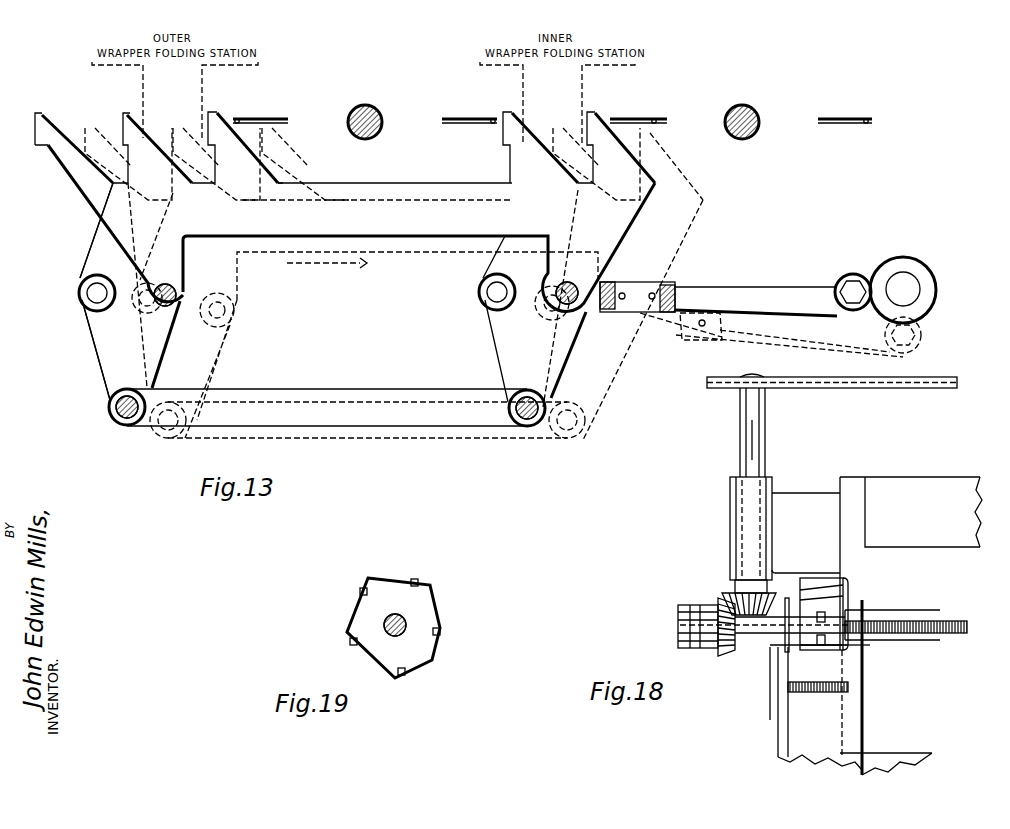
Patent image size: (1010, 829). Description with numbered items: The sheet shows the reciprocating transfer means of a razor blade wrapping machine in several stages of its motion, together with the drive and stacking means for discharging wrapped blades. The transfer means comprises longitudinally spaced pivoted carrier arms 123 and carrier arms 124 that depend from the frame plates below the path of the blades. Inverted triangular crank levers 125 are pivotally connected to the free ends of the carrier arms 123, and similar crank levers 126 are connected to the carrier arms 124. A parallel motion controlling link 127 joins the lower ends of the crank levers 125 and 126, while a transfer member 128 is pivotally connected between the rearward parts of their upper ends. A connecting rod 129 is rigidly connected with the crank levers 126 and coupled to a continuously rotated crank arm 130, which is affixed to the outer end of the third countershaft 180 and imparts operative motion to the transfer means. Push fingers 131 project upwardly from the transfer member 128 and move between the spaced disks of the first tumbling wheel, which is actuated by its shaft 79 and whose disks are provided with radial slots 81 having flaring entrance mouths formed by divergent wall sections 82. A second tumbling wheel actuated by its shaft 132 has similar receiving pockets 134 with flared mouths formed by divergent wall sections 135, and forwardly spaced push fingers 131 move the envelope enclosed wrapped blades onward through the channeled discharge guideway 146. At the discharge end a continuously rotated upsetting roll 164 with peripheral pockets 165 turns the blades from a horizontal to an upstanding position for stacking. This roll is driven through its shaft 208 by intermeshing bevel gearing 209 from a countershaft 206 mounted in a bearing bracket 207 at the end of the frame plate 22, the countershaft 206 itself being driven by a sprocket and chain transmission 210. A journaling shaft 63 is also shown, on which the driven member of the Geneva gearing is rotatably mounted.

In FIG. 13, the push fingers 131 is at (46, 104).
In FIG. 18, the push fingers 131 is at (865, 612).
In FIG. 13, the transfer member 128 is at (392, 183).
In FIG. 18, the transfer member 128 is at (950, 634).
In FIG. 13, the receiving pockets 134 is at (270, 118).
In FIG. 13, the divergent wall sections 135 is at (238, 117).
In FIG. 13, the shaft 132 is at (366, 105).
In FIG. 13, the shaft 79 is at (740, 105).
In FIG. 13, the radial slots 81 is at (650, 118).
In FIG. 13, the divergent wall sections 82 is at (612, 118).
In FIG. 13, the carrier arms 123 is at (100, 243).
In FIG. 13, the crank levers 125 is at (97, 350).
In FIG. 13, the carrier arms 124 is at (492, 258).
In FIG. 13, the crank levers 126 is at (500, 338).
In FIG. 13, the parallel motion controlling link 127 is at (394, 390).
In FIG. 13, the connecting rod 129 is at (742, 292).
In FIG. 13, the crank arm 130 is at (870, 270).
In FIG. 13, the third countershaft 180 is at (902, 272).
In FIG. 18, the sprocket and chain transmission 210 is at (852, 388).
In FIG. 18, the countershaft 206 is at (767, 437).
In FIG. 18, the bearing bracket 207 is at (730, 518).
In FIG. 18, the frame plate 22 is at (918, 478).
In FIG. 18, the bevel gearing 209 is at (728, 600).
In FIG. 18, the shaft 208 is at (748, 640).
In FIG. 19, the shaft 208 is at (408, 622).
In FIG. 18, the upsetting roll 164 is at (815, 578).
In FIG. 19, the upsetting roll 164 is at (430, 590).
In FIG. 18, the peripheral pockets 165 is at (822, 620).
In FIG. 19, the peripheral pockets 165 is at (412, 580).
In FIG. 18, the channeled discharge guideway 146 is at (915, 612).
In FIG. 18, the journaling shaft 63 is at (797, 723).